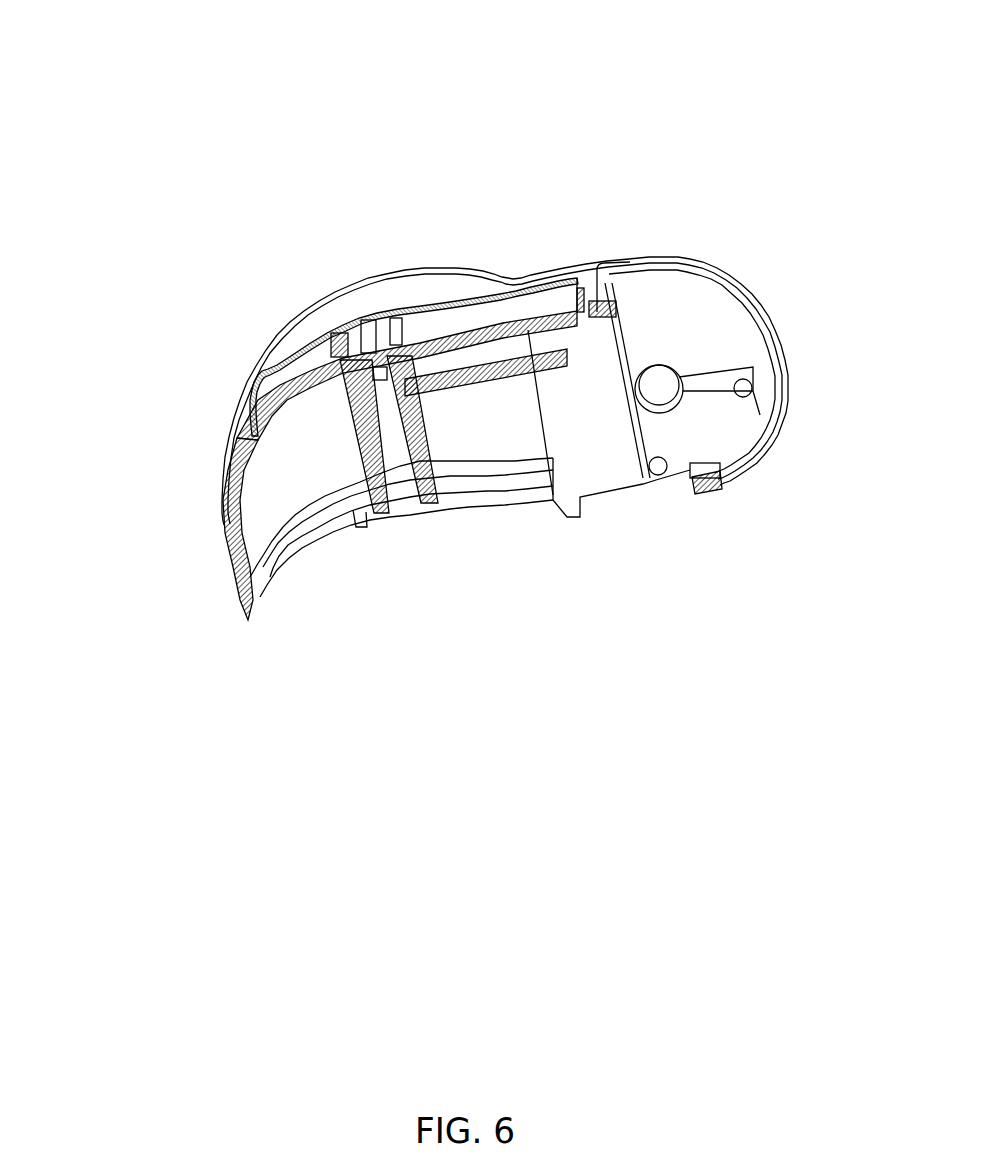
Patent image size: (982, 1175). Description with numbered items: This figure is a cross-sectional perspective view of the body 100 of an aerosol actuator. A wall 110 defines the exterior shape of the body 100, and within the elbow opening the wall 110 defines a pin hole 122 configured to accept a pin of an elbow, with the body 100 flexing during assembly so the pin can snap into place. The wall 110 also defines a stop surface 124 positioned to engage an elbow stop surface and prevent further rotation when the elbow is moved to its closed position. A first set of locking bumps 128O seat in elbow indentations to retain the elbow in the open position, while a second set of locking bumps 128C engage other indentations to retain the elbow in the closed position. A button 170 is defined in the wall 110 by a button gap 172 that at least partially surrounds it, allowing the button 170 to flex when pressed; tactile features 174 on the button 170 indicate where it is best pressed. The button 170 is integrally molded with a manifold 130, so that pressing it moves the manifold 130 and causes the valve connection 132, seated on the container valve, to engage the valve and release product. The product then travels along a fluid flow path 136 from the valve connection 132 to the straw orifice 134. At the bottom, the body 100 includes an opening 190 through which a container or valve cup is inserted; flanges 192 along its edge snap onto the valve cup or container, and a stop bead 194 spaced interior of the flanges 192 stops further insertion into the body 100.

The body 100 is at (150, 228).
The wall 110 is at (226, 533).
The pin hole 122 is at (662, 378).
The stop surface 124 is at (717, 373).
The second set of locking bumps 128C is at (745, 388).
The first set of locking bumps 128O is at (660, 474).
The manifold 130 is at (357, 432).
The valve connection 132 is at (402, 520).
The straw orifice 134 is at (600, 333).
The fluid flow path 136 is at (487, 352).
The button 170 is at (433, 325).
The button gap 172 is at (578, 298).
The tactile features 174 is at (357, 345).
The opening 190 is at (354, 628).
The flanges 192 is at (529, 505).
The stop bead 194 is at (493, 476).